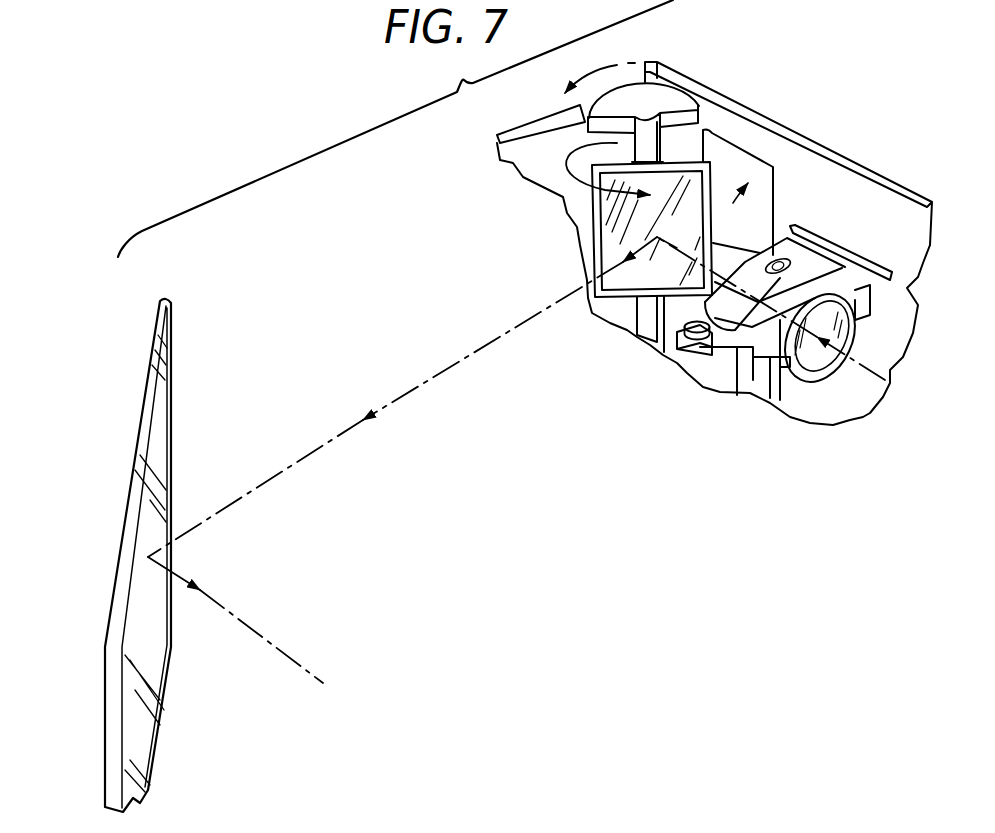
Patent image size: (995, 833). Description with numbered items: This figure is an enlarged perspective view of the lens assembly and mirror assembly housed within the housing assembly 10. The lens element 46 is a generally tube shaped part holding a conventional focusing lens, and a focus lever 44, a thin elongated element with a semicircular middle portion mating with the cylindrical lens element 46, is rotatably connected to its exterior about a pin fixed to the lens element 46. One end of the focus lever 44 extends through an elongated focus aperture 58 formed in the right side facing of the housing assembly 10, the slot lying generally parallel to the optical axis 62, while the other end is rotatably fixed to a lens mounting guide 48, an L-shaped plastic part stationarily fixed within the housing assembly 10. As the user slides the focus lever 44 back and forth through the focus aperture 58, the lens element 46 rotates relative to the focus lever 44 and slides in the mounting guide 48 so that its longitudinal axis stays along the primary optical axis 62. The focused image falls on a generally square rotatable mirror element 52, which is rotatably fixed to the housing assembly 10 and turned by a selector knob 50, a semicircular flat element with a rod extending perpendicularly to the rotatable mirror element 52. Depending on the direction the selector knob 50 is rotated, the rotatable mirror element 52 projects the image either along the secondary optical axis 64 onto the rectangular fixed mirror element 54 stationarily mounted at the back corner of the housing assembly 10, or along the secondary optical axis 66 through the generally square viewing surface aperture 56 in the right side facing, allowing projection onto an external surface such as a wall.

The housing assembly 10 is at (828, 133).
The focus lever 44 is at (740, 330).
The lens element 46 is at (822, 366).
The lens mounting guide 48 is at (777, 386).
The selector knob 50 is at (662, 95).
The rotatable mirror element 52 is at (613, 237).
The fixed mirror element 54 is at (163, 451).
The viewing surface aperture 56 is at (750, 162).
The focus aperture 58 is at (874, 266).
The optical axis 62 is at (866, 414).
The secondary optical axis 64 is at (493, 341).
The secondary optical axis 66 is at (668, 230).